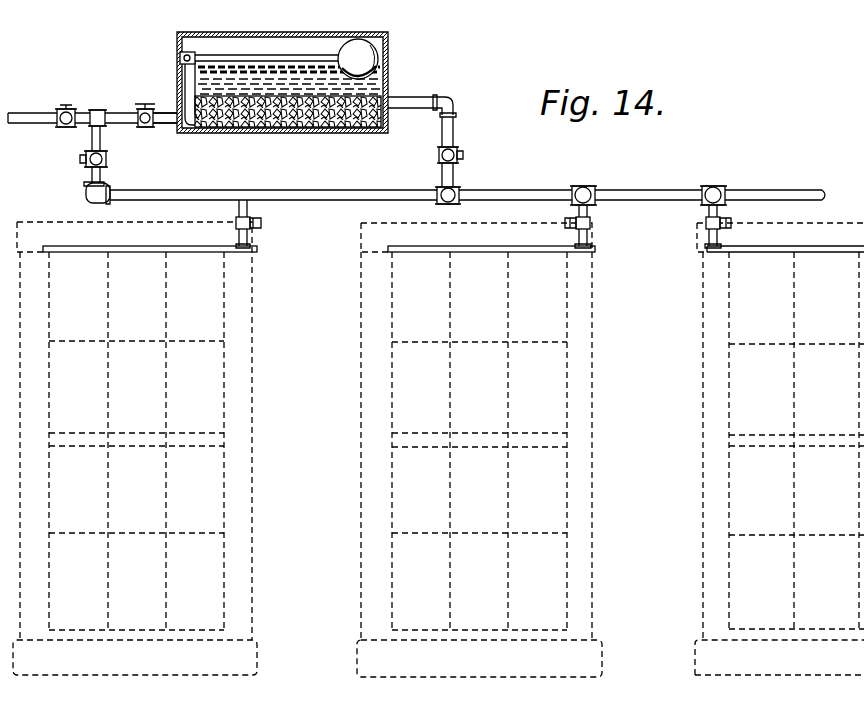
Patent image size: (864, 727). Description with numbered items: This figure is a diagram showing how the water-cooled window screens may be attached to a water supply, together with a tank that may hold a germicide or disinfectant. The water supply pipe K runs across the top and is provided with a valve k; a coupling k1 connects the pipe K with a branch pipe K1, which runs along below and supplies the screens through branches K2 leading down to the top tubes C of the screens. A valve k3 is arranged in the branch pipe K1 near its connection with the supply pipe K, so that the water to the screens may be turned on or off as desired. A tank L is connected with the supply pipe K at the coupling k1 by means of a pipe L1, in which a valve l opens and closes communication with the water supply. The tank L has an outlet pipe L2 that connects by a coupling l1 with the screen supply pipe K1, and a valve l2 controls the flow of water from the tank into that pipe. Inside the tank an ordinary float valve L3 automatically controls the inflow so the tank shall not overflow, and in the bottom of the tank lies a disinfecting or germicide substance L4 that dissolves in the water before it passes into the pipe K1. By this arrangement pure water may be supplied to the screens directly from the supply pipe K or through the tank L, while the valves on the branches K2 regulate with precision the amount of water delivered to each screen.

The water supply pipe K is at (92, 108).
The branch pipe K1 is at (442, 165).
The branches K2 is at (474, 217).
The valve k is at (71, 111).
The coupling k1 is at (100, 107).
The valve k3 is at (103, 158).
The tank L is at (282, 72).
The pipe L1 is at (135, 109).
The outlet pipe L2 is at (433, 141).
The float valve L3 is at (279, 81).
The disinfecting or germicide substance L4 is at (338, 126).
The valve l is at (164, 128).
The coupling l1 is at (454, 187).
The valve l2 is at (455, 153).
The top tubes of the screens C is at (438, 449).